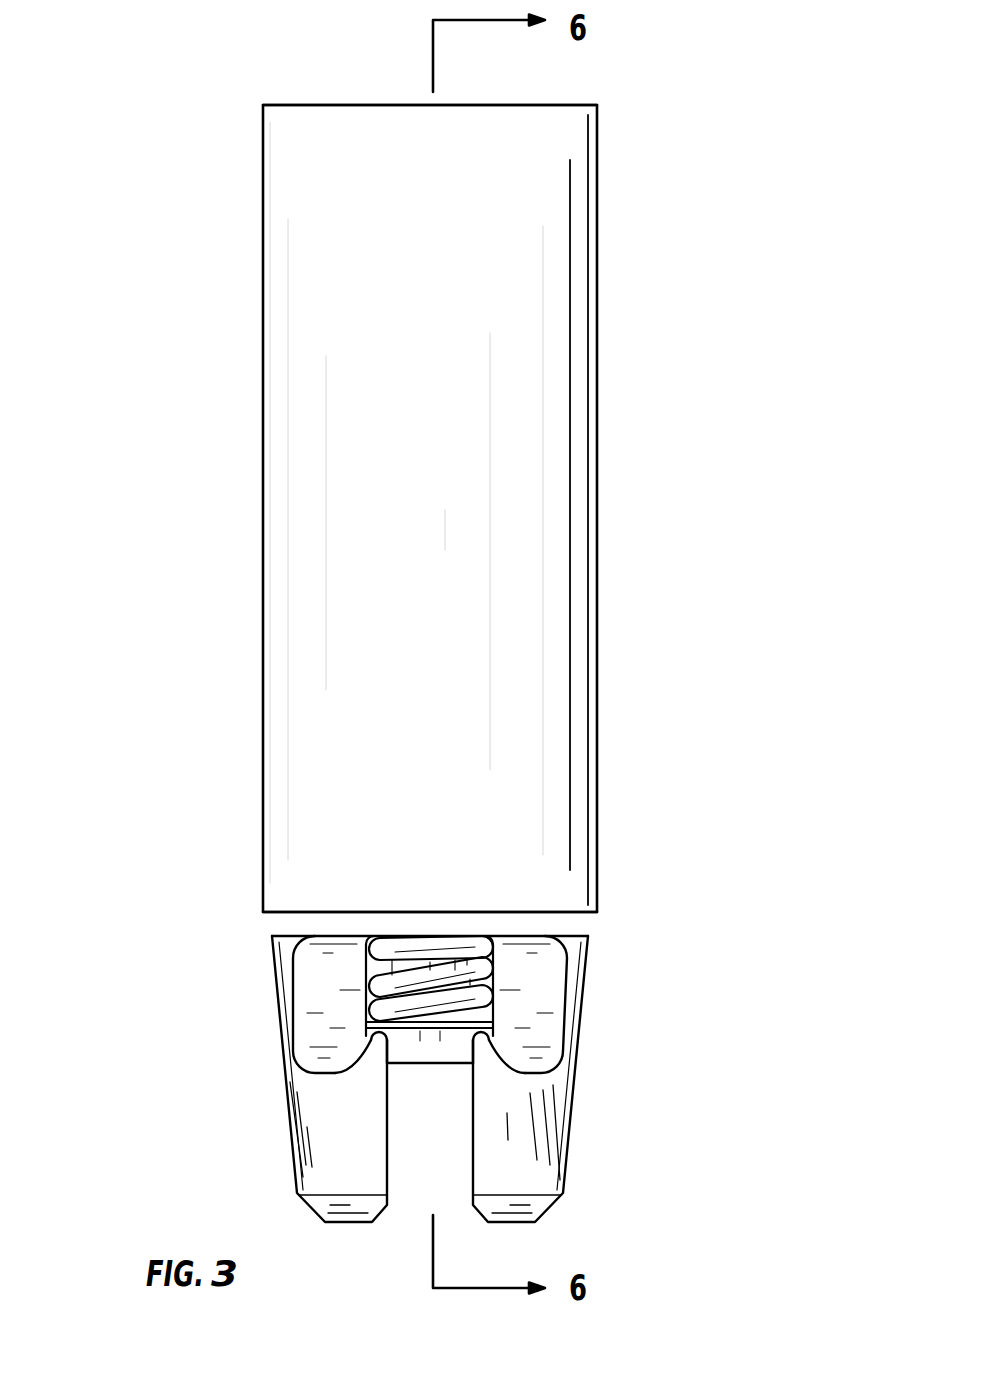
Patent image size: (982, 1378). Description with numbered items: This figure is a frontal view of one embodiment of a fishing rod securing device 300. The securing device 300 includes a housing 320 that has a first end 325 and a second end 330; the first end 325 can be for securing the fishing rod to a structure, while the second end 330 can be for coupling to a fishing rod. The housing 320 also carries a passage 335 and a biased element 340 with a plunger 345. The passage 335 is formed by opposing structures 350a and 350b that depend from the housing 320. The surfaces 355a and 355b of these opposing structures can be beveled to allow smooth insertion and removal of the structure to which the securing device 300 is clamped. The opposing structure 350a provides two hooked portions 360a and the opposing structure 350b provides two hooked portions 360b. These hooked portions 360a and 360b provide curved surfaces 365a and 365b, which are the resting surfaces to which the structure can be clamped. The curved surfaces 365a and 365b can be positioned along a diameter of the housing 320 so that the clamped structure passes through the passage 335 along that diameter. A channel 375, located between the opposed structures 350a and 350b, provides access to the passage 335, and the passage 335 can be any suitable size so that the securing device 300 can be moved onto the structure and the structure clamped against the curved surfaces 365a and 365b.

The securing device 300 is at (762, 396).
The housing 320 is at (258, 505).
The first end 325 is at (612, 860).
The second end 330 is at (247, 108).
The passage 335 is at (325, 975).
The biased element 340 is at (490, 974).
The plunger 345 is at (497, 1029).
The opposing structure 350a is at (268, 972).
The opposing structure 350b is at (586, 1010).
The surface 355a is at (322, 1008).
The surface 355b is at (552, 990).
The hooked portion 360a is at (373, 1036).
The hooked portion 360b is at (487, 1037).
The curved surface 365a is at (315, 1075).
The curved surface 365b is at (548, 1063).
The channel 375 is at (410, 1213).